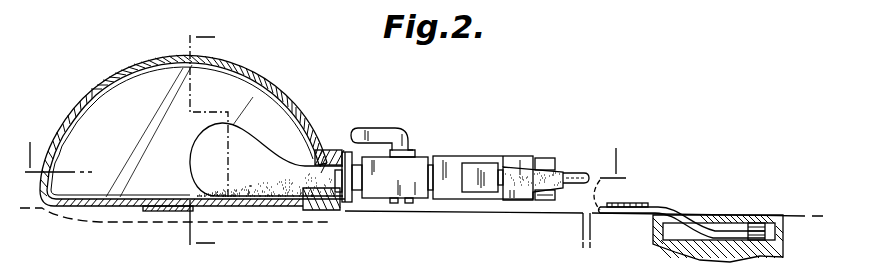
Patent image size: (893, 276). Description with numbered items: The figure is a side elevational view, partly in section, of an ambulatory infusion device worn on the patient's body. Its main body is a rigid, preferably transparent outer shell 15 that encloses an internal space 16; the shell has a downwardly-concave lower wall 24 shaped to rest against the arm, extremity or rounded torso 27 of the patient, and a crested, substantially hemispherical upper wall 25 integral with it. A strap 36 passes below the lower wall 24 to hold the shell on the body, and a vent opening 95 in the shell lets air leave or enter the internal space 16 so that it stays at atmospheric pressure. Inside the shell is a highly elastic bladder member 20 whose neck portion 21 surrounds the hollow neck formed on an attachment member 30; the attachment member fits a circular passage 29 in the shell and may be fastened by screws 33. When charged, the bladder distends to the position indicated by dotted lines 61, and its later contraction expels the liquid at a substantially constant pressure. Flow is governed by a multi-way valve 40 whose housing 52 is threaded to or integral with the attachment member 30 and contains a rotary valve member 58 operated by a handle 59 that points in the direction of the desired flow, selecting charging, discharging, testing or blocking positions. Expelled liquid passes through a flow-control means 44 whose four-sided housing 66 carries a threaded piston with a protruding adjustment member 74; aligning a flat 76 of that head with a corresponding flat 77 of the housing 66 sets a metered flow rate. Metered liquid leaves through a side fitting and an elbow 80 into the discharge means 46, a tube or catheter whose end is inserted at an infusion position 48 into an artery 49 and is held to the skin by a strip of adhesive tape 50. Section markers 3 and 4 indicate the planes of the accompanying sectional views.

The section line 3- 3 is at (324, 163).
The section line 4- 4 is at (212, 142).
The outer shell 15 is at (286, 79).
The internal space 16 is at (238, 82).
The bladder member 20 is at (187, 163).
The neck portion 21 is at (318, 208).
The lower wall 24 is at (104, 209).
The upper wall 25 is at (96, 92).
The rounded torso 27 is at (478, 212).
The circular passage 29 is at (313, 160).
The attachment member 30 is at (348, 204).
The screws 33 is at (362, 196).
The strap 36 is at (158, 212).
The multi-way valve 40 is at (431, 206).
The flow-control means 44 is at (513, 207).
The discharge means 46 is at (583, 170).
The infusion position 48 is at (688, 216).
The artery 49 is at (763, 223).
The strip of adhesive tape 50 is at (638, 206).
The housing 52 is at (388, 196).
The rotary valve member 58 is at (401, 150).
The handle 59 is at (372, 128).
The dotted lines 61 is at (152, 79).
The housing 66 is at (450, 157).
The adjustment member 74 is at (546, 201).
The flat 76 is at (547, 158).
The flat 77 is at (528, 157).
The elbow 80 is at (478, 165).
The vent opening 95 is at (322, 150).